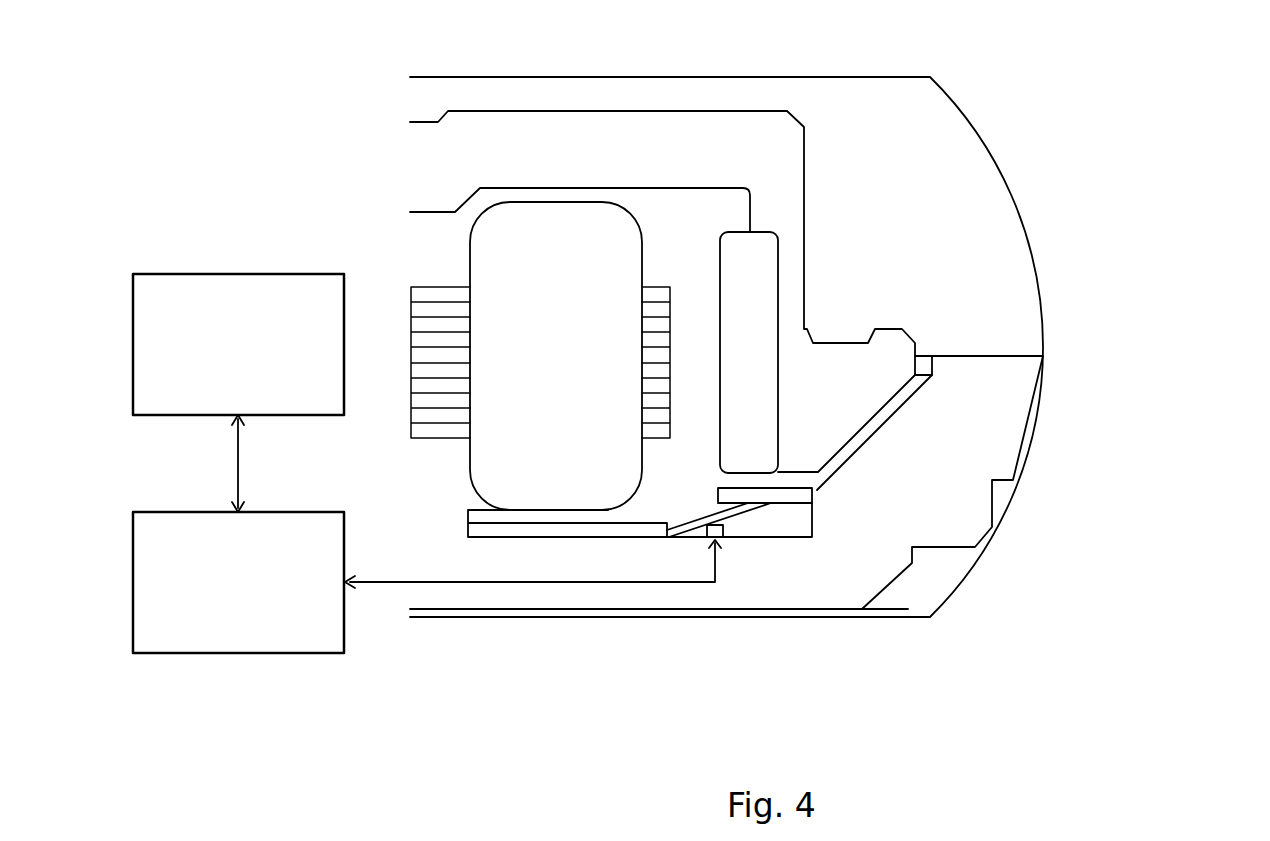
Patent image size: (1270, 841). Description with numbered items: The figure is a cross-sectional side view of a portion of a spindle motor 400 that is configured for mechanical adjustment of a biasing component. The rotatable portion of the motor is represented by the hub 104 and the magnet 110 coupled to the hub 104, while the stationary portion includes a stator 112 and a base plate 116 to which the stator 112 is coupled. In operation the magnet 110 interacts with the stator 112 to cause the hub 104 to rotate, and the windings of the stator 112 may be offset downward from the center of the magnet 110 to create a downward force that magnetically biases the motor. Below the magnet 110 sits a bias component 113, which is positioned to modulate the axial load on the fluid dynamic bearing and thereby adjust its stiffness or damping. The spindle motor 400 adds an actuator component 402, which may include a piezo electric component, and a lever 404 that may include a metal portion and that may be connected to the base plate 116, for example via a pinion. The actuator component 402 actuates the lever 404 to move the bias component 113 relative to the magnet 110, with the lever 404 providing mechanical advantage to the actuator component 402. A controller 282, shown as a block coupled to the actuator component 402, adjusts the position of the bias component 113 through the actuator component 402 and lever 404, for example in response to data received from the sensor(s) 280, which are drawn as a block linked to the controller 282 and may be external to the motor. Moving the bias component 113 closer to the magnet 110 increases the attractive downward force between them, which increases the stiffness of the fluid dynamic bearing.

The spindle motor 400 is at (833, 377).
The hub 104 is at (573, 128).
The magnet 110 is at (752, 282).
The stator 112 is at (600, 488).
The biasing component 113 is at (808, 495).
The base plate 116 is at (565, 568).
The actuator component 402 is at (723, 528).
The lever 404 is at (742, 513).
The sensor(s) 280 is at (238, 344).
The controller 282 is at (238, 582).